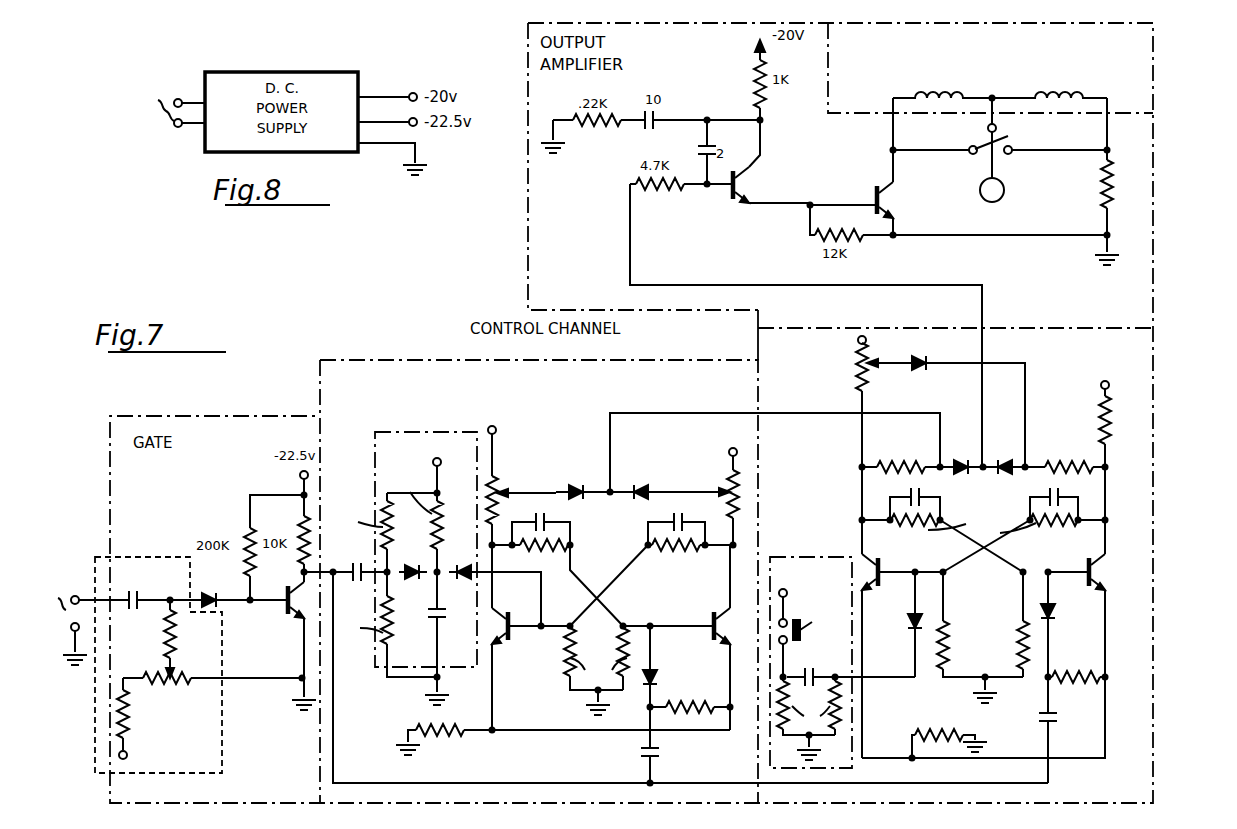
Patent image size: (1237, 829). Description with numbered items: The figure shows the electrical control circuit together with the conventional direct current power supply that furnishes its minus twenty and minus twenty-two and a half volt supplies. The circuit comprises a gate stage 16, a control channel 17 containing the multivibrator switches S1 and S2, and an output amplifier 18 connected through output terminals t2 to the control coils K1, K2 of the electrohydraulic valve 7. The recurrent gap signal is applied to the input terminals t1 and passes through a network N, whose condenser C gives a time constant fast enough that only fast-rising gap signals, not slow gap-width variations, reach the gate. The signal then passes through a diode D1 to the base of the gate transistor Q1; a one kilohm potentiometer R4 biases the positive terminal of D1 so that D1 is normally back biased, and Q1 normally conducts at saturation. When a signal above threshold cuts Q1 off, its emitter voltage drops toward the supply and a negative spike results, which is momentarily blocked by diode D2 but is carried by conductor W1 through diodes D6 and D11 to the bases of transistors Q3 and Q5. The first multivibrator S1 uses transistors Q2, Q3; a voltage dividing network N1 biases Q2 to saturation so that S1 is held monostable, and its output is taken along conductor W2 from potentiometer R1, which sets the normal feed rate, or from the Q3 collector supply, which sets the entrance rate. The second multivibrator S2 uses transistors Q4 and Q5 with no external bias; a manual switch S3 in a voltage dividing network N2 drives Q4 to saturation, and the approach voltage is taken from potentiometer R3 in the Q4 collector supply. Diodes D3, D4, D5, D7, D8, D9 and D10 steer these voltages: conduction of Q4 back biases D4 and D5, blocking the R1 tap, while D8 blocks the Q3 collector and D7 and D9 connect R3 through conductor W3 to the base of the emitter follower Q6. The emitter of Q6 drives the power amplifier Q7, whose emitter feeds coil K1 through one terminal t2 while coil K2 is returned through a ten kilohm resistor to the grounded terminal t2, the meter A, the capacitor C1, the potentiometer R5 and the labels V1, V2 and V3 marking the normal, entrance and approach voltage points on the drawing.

The electrohydraulic valve 7 is at (1153, 86).
The gate stage 16 is at (178, 405).
The control channel 17 is at (758, 345).
The output amplifier 18 is at (1153, 238).
The control coil K1 is at (960, 82).
The control coil K2 is at (1030, 84).
The ammeter A is at (992, 190).
The gate transistor Q1 is at (286, 610).
The transistor Q2 is at (531, 637).
The transistor Q3 is at (712, 624).
The transistor Q4 is at (882, 566).
The transistor Q5 is at (1088, 568).
The emitter follower Q6 is at (729, 202).
The power amplifier Q7 is at (872, 196).
The diode D1 is at (211, 584).
The diode D2 is at (412, 584).
The diode D3 is at (460, 584).
The diode D4 is at (575, 488).
The diode D5 is at (652, 488).
The diode D6 is at (656, 675).
The diode D7 is at (920, 371).
The diode D8 is at (962, 474).
The diode D9 is at (1007, 474).
The diode D10 is at (912, 629).
The diode D11 is at (1054, 605).
The condenser C is at (143, 608).
The capacitor C1 is at (435, 619).
The potentiometer R1 is at (484, 500).
The potentiometer R3 is at (863, 401).
The potentiometer R4 is at (178, 674).
The potentiometer R5 is at (742, 486).
The network N is at (153, 556).
The voltage dividing network N1 is at (391, 433).
The voltage dividing network N2 is at (802, 557).
The multivibrator S1 is at (368, 362).
The multivibrator S2 is at (1155, 379).
The manual switch S3 is at (808, 620).
The voltage V1 (normal) V1 is at (502, 483).
The voltage V2 (enter) V2 is at (736, 486).
The voltage V3 (approach) V3 is at (884, 399).
The conductor W1 is at (335, 737).
The conductor W2 is at (693, 400).
The conductor W3 is at (655, 282).
The input terminals t1 is at (70, 601).
The output terminals t2 is at (891, 150).